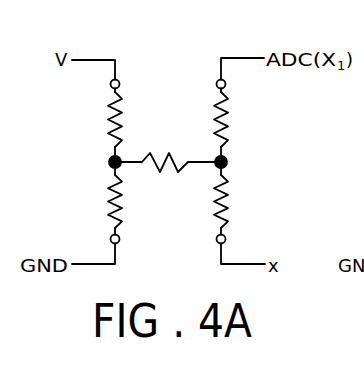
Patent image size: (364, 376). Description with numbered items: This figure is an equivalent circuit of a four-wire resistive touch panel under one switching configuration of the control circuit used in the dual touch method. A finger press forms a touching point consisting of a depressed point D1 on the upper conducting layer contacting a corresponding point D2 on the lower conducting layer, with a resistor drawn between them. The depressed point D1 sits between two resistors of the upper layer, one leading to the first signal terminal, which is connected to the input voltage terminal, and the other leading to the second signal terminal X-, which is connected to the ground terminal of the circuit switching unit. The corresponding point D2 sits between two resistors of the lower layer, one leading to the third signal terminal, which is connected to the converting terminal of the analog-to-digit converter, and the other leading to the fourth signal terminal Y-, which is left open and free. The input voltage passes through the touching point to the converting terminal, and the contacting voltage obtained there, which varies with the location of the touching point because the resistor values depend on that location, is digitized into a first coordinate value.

The depressed point D1 is at (98, 165).
The corresponding point D2 is at (236, 165).
The second signal terminal X- is at (131, 242).
The fourth signal terminal Y- is at (235, 242).